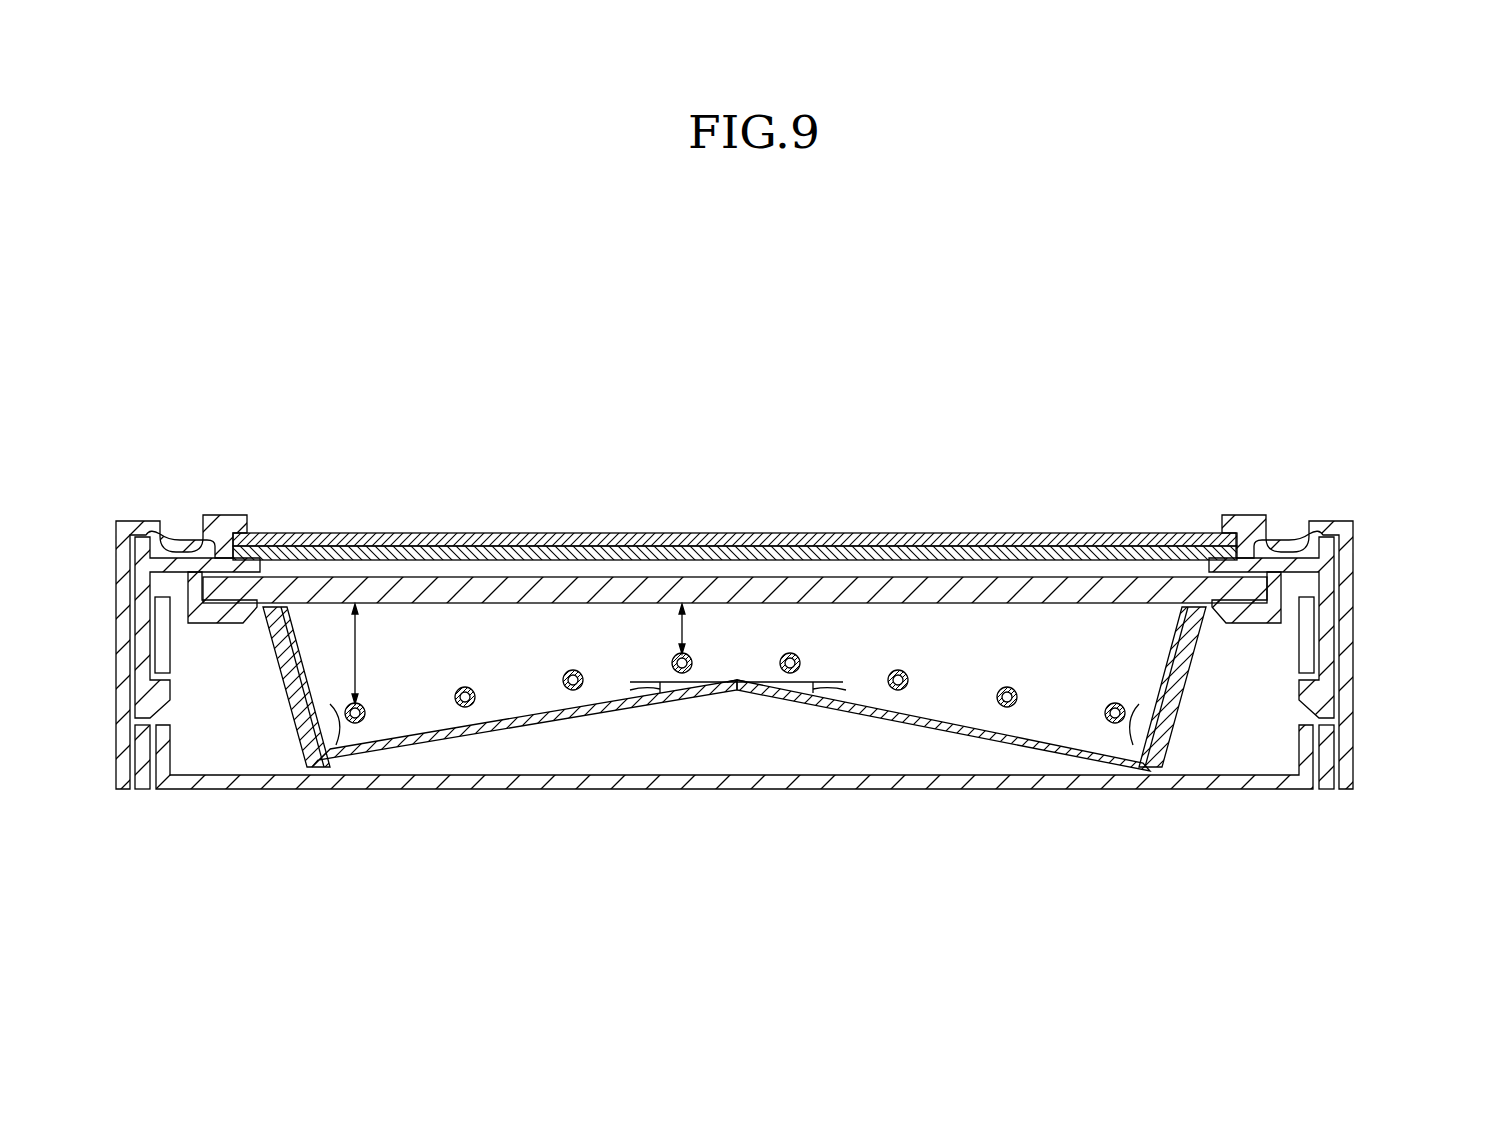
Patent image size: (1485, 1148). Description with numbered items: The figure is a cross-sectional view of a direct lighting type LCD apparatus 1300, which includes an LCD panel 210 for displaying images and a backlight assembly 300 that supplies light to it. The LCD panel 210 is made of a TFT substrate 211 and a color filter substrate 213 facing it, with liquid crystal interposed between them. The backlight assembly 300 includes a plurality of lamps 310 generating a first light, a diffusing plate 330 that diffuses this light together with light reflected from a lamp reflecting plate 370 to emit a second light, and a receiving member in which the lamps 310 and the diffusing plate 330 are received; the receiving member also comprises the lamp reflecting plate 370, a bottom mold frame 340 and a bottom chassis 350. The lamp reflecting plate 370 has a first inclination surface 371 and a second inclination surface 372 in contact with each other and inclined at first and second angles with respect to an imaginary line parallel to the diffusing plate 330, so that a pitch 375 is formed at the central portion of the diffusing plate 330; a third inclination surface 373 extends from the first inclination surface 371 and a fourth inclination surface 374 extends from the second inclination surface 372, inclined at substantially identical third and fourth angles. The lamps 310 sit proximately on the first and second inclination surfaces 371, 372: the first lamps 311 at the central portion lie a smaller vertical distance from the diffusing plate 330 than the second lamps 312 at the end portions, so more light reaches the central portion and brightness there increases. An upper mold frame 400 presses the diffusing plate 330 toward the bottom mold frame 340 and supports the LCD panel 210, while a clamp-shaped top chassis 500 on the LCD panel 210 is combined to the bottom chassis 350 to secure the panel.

The direct lighting LCD apparatus 1300 is at (772, 337).
The LCD panel 210 is at (795, 442).
The TFT substrate 211 is at (657, 546).
The color filter substrate 213 is at (775, 549).
The backlight assembly 300 is at (1170, 850).
The lamps 310 is at (1005, 708).
The first lamps 311 is at (672, 657).
The second lamps 312 is at (366, 722).
The diffusing plate 330 is at (948, 596).
The bottom mold frame 340 is at (1313, 583).
The bottom chassis 350 is at (1153, 776).
The lamp reflecting plate 370 is at (607, 713).
The first inclination surface 371 is at (440, 749).
The second inclination surface 372 is at (830, 712).
The third inclination surface 373 is at (317, 748).
The fourth inclination surface 374 is at (1177, 735).
The pitch 375 is at (733, 700).
The upper mold frame 400 is at (1312, 563).
The top chassis 500 is at (1322, 527).